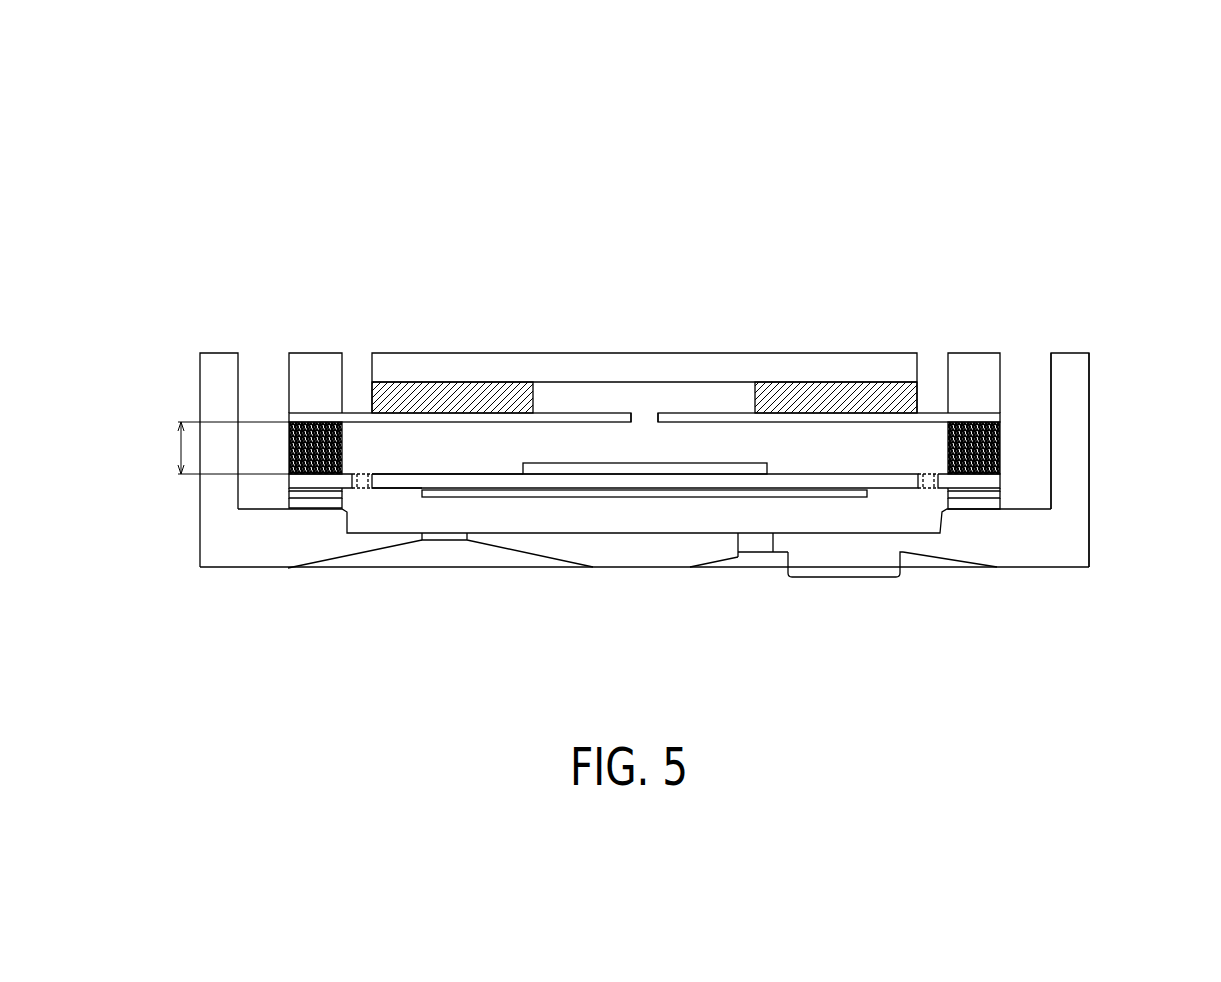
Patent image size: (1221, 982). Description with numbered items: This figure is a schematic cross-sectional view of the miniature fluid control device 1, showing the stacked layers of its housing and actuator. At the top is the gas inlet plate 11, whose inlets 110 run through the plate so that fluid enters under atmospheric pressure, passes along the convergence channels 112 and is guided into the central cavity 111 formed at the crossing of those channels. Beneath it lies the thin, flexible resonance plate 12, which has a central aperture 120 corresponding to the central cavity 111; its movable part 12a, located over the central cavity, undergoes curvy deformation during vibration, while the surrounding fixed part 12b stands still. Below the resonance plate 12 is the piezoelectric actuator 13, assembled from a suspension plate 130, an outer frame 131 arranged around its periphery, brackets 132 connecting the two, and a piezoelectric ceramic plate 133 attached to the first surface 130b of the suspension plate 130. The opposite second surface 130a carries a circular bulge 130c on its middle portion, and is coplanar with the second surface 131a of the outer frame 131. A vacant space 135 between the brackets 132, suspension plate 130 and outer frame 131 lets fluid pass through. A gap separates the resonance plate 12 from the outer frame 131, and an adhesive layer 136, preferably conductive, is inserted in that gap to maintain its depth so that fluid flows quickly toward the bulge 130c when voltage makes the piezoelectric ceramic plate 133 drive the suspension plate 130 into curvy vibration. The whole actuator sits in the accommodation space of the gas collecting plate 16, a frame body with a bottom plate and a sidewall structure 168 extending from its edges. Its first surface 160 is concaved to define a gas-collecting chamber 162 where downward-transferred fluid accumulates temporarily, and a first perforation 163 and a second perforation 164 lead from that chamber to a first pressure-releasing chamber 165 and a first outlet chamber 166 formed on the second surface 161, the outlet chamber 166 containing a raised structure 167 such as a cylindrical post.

The miniature fluid control device 1 is at (1195, 136).
The gas inlet plate 11 is at (977, 367).
The inlet 110 is at (932, 367).
The central cavity 111 is at (545, 398).
The convergence channel 112 is at (858, 382).
The resonance plate 12 is at (795, 285).
The movable part 12a is at (732, 410).
The fixed part 12b is at (795, 418).
The central aperture 120 is at (645, 415).
The piezoelectric actuator 13 is at (704, 567).
The suspension plate 130 is at (532, 441).
The second surface 130a is at (463, 470).
The first surface 130b is at (385, 490).
The bulge 130c is at (607, 463).
The outer frame 131 is at (978, 482).
The second surface 131a is at (313, 475).
The bracket 132 is at (345, 493).
The piezoelectric ceramic plate 133 is at (668, 490).
The vacant space 135 is at (360, 473).
The adhesive layer 136 is at (1000, 445).
The gas collecting plate 16 is at (1083, 547).
The first surface 160 is at (1070, 352).
The second surface 161 is at (1050, 568).
The gas-collecting chamber 162 is at (595, 515).
The first perforation 163 is at (443, 540).
The second perforation 164 is at (752, 542).
The first pressure-releasing chamber 165 is at (372, 557).
The first outlet chamber 166 is at (915, 567).
The raised structure 167 is at (842, 563).
The sidewall structure 168 is at (1067, 390).